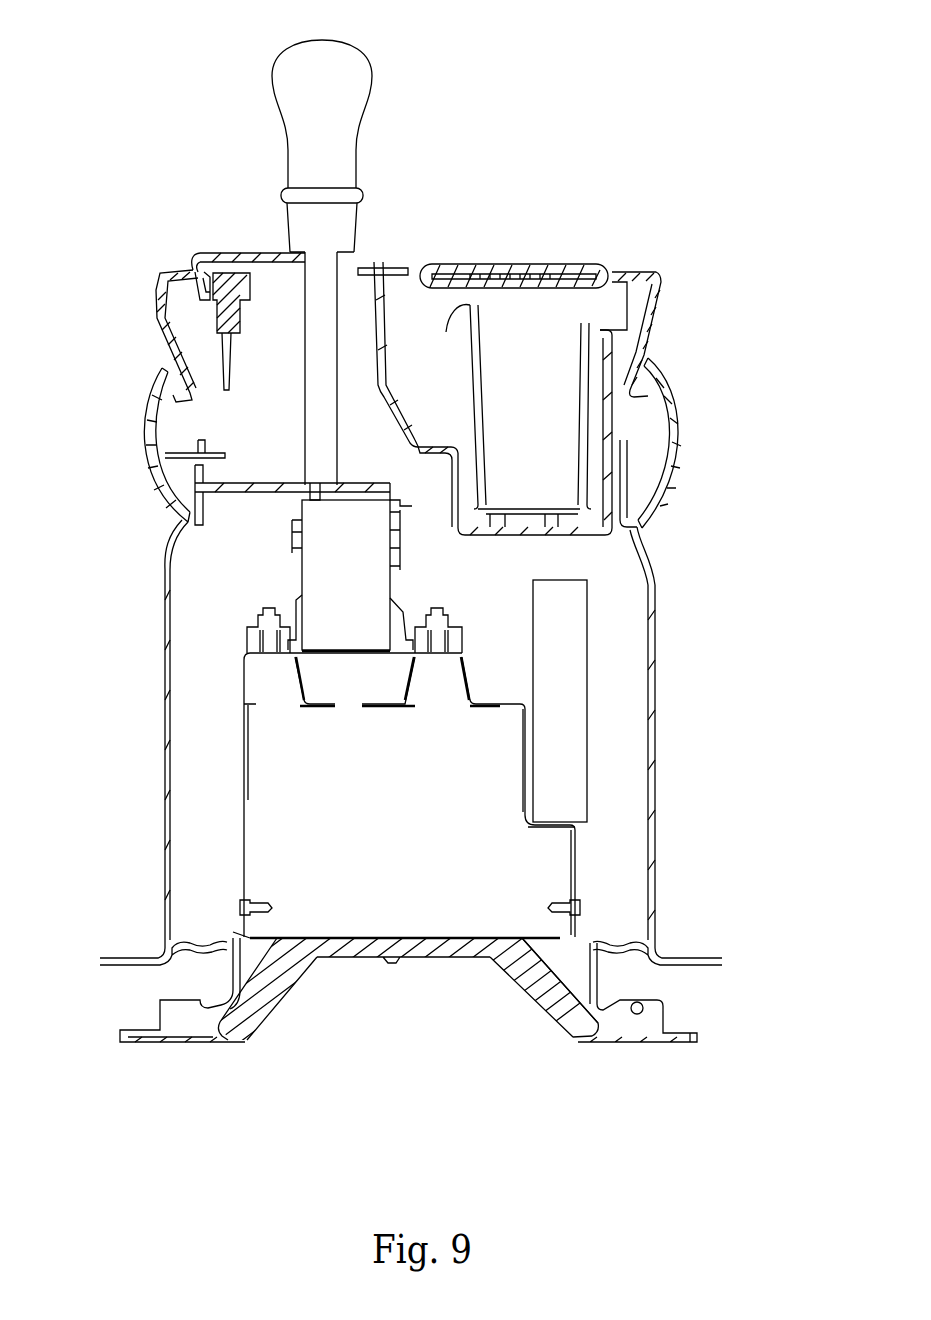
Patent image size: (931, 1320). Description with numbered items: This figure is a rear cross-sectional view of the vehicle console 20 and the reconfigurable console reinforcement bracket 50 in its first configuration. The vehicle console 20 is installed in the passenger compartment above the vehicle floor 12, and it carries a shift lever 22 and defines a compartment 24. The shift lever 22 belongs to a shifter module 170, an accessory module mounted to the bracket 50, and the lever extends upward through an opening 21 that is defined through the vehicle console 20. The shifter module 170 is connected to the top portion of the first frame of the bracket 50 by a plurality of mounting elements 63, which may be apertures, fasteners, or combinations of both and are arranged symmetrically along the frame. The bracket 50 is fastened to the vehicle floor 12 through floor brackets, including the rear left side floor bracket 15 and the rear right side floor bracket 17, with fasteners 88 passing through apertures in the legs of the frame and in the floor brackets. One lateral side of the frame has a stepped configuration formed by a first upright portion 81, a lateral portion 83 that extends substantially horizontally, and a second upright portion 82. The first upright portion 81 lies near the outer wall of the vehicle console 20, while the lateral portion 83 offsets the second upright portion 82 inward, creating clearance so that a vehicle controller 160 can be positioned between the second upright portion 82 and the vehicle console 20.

The shift lever 22 is at (357, 48).
The opening 21 is at (299, 262).
The compartment 24 is at (578, 266).
The vehicle console 20 is at (686, 285).
The shifter module 170 is at (294, 566).
The mounting elements 63 is at (244, 677).
The bracket 50 is at (220, 770).
The vehicle controller 160 is at (587, 690).
The second upright portion 82 is at (523, 760).
The lateral portion 83 is at (540, 833).
The first upright portion 81 is at (573, 883).
The fasteners 88 is at (590, 920).
The rear left side floor bracket 15 is at (276, 926).
The rear right side floor bracket 17 is at (560, 925).
The vehicle floor 12 is at (683, 1030).